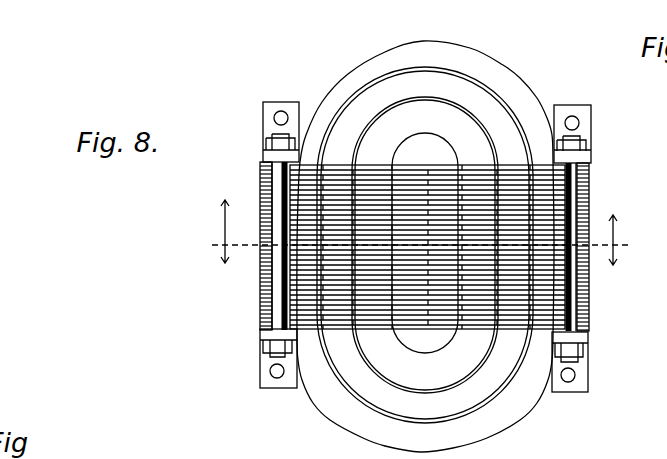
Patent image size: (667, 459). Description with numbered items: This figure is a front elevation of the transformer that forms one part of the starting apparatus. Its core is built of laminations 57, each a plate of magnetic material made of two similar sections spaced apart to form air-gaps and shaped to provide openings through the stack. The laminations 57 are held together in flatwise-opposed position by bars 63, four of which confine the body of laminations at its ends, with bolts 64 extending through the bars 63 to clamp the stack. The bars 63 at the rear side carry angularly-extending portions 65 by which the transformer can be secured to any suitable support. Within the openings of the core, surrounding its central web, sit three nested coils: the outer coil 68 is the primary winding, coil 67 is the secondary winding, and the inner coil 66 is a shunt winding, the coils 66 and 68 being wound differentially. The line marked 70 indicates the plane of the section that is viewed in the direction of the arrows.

The laminations 57 is at (590, 210).
The bars 63 is at (270, 153).
The bolts 64 is at (280, 249).
The angularly-extending portions 65 is at (285, 102).
The shunt winding coil 66 is at (425, 245).
The secondary winding coil 67 is at (425, 245).
The primary winding coil 68 is at (348, 74).
The axis line 70 is at (420, 232).